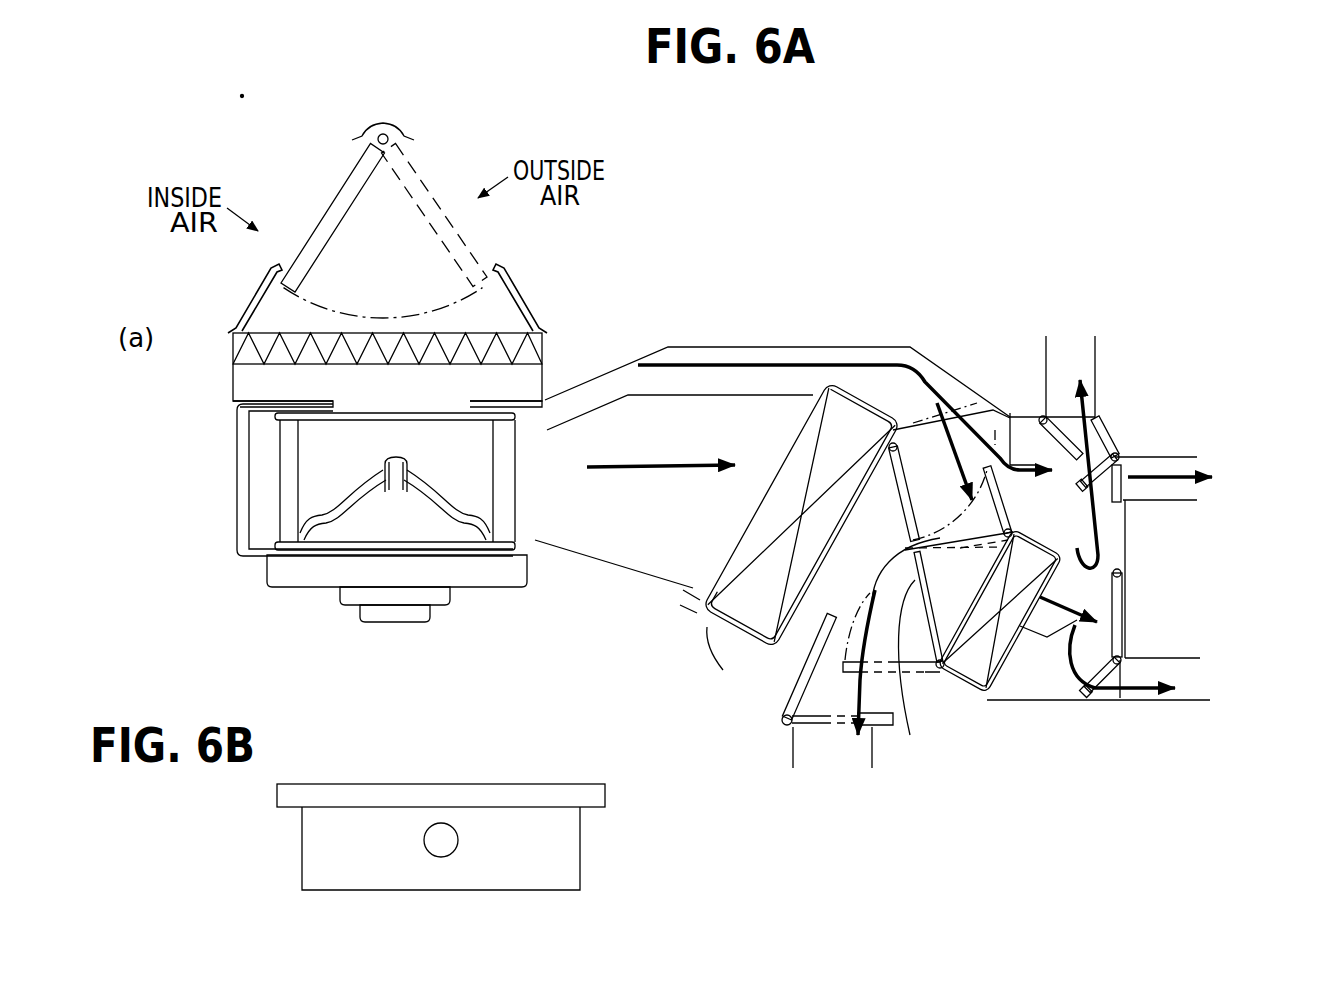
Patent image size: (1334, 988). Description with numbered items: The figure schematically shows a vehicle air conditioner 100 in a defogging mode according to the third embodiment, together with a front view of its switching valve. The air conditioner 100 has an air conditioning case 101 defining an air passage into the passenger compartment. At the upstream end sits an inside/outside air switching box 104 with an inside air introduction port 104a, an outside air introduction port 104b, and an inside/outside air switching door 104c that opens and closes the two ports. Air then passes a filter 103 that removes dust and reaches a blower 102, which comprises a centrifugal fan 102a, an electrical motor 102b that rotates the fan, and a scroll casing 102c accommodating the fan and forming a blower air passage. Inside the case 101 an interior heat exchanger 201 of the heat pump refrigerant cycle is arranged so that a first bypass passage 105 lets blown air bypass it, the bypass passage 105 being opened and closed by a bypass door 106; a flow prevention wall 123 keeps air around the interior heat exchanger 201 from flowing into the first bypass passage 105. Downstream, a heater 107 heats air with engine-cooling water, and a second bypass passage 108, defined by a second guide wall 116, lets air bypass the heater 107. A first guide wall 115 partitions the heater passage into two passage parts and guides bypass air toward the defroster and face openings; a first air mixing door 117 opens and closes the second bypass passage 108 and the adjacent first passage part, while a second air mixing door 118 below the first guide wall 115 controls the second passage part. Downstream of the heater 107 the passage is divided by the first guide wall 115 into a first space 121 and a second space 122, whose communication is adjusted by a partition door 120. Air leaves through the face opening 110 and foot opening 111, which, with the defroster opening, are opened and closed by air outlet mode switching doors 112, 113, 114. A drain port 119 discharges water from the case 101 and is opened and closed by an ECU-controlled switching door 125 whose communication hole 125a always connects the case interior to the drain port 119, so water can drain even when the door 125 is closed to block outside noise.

In FIG. 6A, the vehicle air conditioner 100 is at (767, 268).
In FIG. 6A, the air conditioning case 101 is at (645, 352).
In FIG. 6A, the blower 102 is at (297, 573).
In FIG. 6A, the centrifugal fan 102a is at (503, 498).
In FIG. 6A, the electrical motor 102b is at (447, 595).
In FIG. 6A, the scroll casing 102c is at (235, 522).
In FIG. 6A, the filter 103 is at (533, 345).
In FIG. 6A, the inside/outside air switching box 104 is at (517, 298).
In FIG. 6A, the inside air introduction port 104a is at (288, 193).
In FIG. 6A, the outside air introduction port 104b is at (423, 145).
In FIG. 6A, the inside/outside air switching door 104c is at (348, 158).
In FIG. 6A, the first bypass passage 105 is at (860, 385).
In FIG. 6A, the bypass door 106 is at (937, 407).
In FIG. 6A, the heater 107 is at (1045, 637).
In FIG. 6A, the second bypass passage 108 is at (1037, 463).
In FIG. 6A, the face opening 110 is at (1160, 470).
In FIG. 6A, the foot opening 111 is at (1153, 700).
In FIG. 6A, the air outlet mode switching door 112 is at (1100, 413).
In FIG. 6A, the air outlet mode switching door 113 is at (1123, 490).
In FIG. 6A, the air outlet mode switching door 114 is at (1083, 697).
In FIG. 6A, the first guide wall 115 is at (932, 672).
In FIG. 6A, the second guide wall 116 is at (1008, 415).
In FIG. 6A, the first air mixing door 117 is at (990, 427).
In FIG. 6A, the second air mixing door 118 is at (903, 663).
In FIG. 6A, the drain port 119 is at (832, 762).
In FIG. 6A, the partition door 120 is at (1120, 610).
In FIG. 6A, the first space 121 is at (1113, 548).
In FIG. 6A, the second space 122 is at (1080, 660).
In FIG. 6A, the flow prevention wall 123 is at (685, 395).
In FIG. 6A, the switching door 125 is at (807, 668).
In FIG. 6B, the switching door 125 is at (503, 780).
In FIG. 6B, the communication hole 125a is at (445, 843).
In FIG. 6A, the interior heat exchanger 201 is at (700, 612).